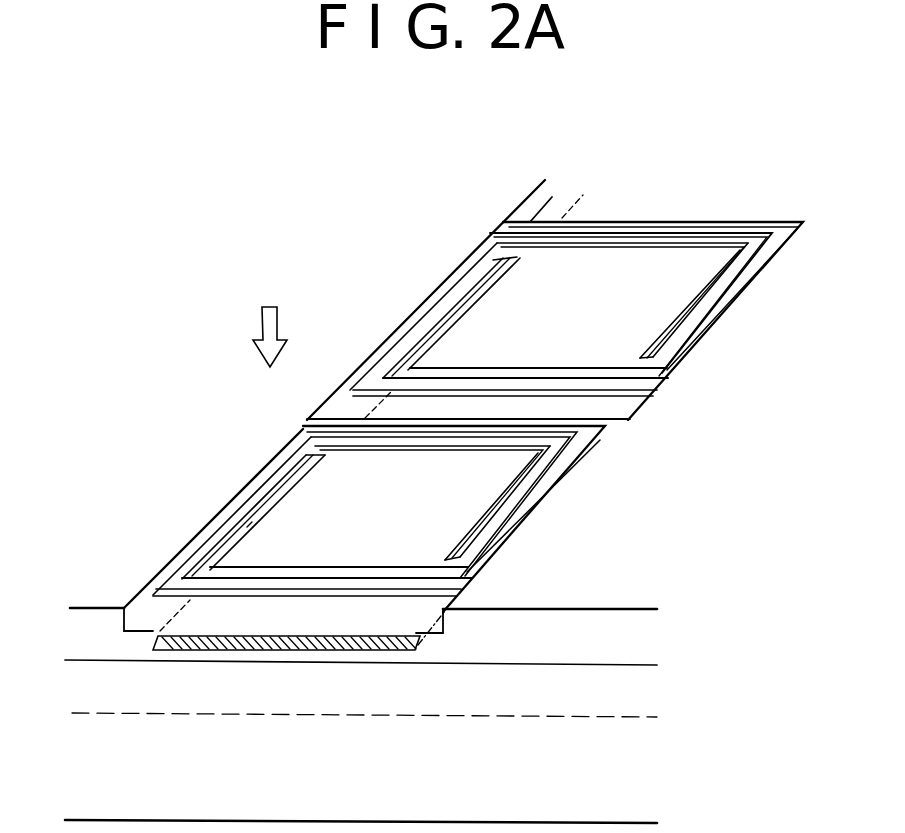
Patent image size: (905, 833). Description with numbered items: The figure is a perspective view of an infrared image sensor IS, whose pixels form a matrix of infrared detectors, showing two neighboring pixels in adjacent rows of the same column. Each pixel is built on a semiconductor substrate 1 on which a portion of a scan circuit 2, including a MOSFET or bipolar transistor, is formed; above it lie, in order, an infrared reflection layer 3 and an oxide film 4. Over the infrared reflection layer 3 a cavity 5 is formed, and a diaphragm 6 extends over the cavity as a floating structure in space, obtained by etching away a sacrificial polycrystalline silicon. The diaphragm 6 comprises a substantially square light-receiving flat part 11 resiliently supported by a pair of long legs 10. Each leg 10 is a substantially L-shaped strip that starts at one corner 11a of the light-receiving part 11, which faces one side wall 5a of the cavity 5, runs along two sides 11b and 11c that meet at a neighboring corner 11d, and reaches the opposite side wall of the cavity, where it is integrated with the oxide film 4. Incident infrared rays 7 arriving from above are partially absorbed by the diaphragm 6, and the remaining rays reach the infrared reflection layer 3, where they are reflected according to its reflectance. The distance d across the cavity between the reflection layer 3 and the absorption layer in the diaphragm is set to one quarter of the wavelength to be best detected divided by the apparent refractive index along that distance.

The semiconductor substrate 1 is at (109, 761).
The scan circuit 2 is at (98, 687).
The infrared reflection layer 3 is at (153, 643).
The oxide film 4 is at (590, 634).
The cavity 5 is at (368, 607).
The side wall of the cavity 5a is at (287, 447).
The diaphragm 6 is at (262, 482).
The incident infrared rays 7 is at (268, 307).
The long legs 10 is at (178, 580).
The light-receiving flat part 11 is at (498, 485).
The corner of the light-receiving part 11a is at (403, 437).
The side of the light-receiving part 11b is at (247, 527).
The side of the light-receiving part 11c is at (437, 437).
The neighboring corner of the light-receiving part 11d is at (233, 563).
The distance between the reflection layer and the absorption layer d is at (215, 535).
The infrared image sensor IS is at (748, 160).